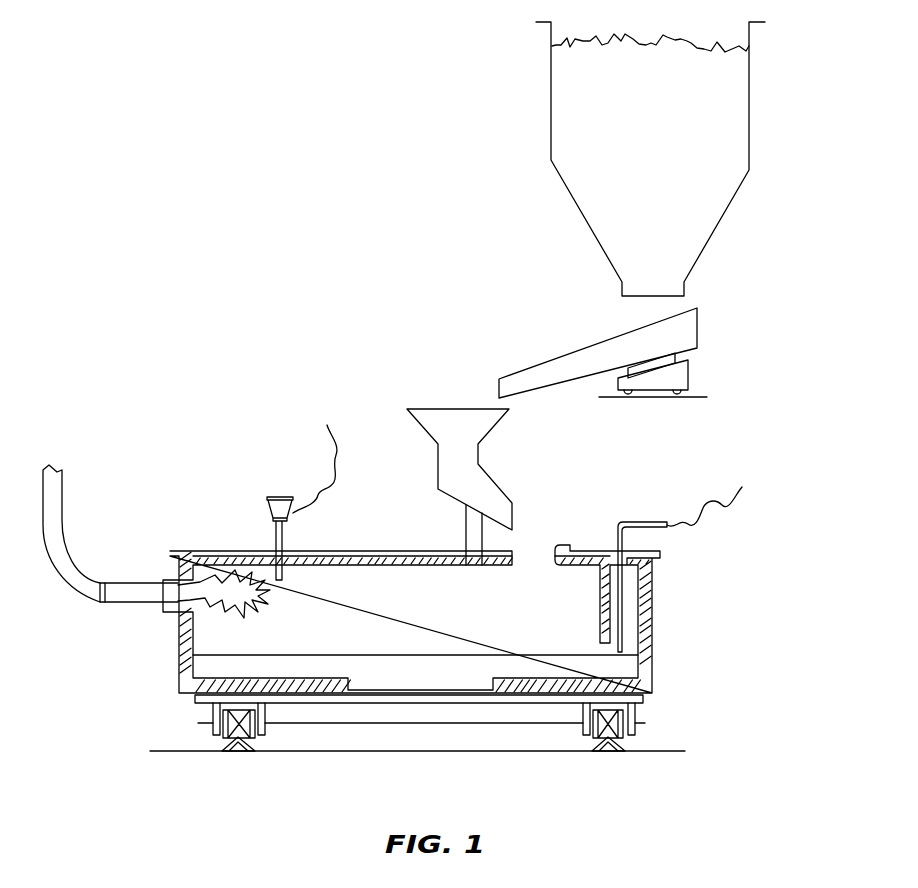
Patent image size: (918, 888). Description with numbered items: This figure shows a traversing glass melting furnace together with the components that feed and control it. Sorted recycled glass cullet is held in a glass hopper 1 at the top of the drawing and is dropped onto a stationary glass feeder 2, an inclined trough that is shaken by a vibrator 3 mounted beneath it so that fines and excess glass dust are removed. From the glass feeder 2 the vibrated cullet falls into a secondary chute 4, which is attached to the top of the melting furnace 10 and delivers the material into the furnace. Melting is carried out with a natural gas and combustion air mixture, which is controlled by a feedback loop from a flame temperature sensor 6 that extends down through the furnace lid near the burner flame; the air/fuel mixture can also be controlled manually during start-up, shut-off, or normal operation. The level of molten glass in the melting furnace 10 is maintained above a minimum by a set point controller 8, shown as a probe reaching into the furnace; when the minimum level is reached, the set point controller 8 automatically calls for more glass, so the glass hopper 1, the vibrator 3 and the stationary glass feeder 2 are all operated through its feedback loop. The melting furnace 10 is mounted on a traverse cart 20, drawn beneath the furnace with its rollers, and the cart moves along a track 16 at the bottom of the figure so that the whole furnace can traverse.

The glass hopper 1 is at (693, 131).
The stationary glass feeder 2 is at (680, 333).
The vibrator 3 is at (670, 385).
The secondary chute 4 is at (448, 422).
The flame temperature sensor 6 is at (265, 492).
The set point controller 8 is at (637, 537).
The melting furnace 10 is at (658, 612).
The traverse cart 20 is at (650, 698).
The track 16 is at (633, 750).